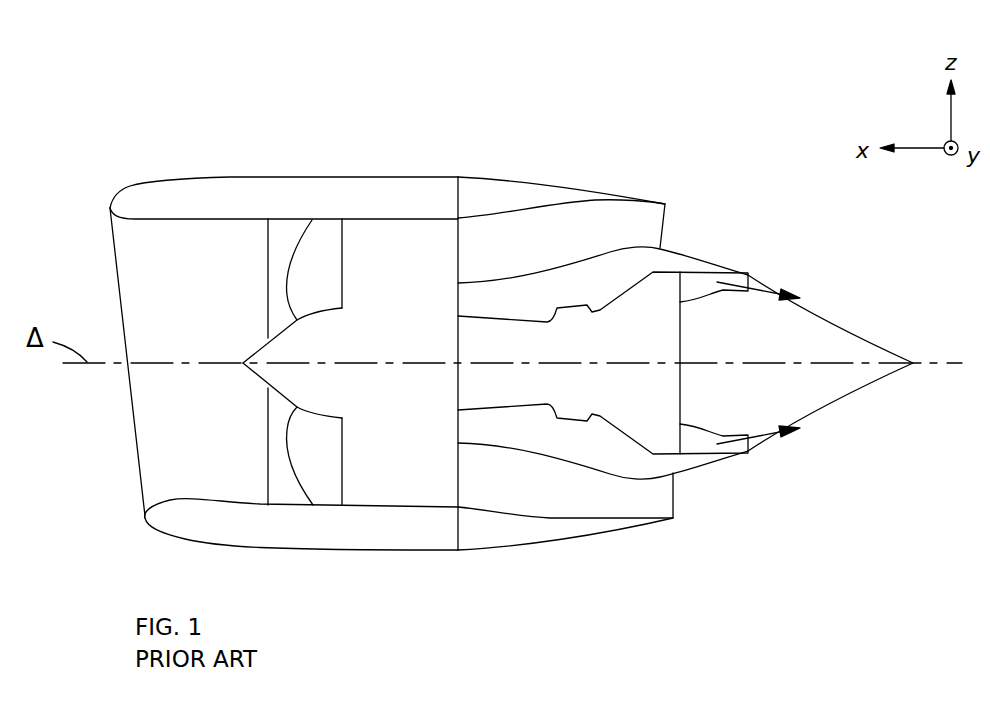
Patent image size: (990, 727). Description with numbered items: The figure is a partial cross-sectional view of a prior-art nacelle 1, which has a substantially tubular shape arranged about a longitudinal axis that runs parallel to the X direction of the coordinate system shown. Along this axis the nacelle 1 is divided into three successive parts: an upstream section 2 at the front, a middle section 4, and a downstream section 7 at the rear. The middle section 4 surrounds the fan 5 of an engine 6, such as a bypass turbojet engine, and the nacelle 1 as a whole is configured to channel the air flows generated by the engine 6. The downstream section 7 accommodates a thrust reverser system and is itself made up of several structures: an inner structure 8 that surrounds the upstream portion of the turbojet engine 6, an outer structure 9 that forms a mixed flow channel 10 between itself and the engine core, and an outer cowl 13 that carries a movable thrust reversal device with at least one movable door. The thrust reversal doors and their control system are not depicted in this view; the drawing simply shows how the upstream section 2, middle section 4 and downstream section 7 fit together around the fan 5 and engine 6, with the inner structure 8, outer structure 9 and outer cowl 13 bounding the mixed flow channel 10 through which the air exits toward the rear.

The nacelle 1 is at (512, 356).
The upstream section 2 is at (185, 210).
The middle section 4 is at (410, 185).
The fan 5 is at (394, 490).
The engine 6 is at (657, 307).
The downstream section 7 is at (574, 170).
The inner structure 8 is at (650, 236).
The outer structure 9 is at (592, 200).
The mixed flow channel 10 is at (473, 246).
The outer cowl 13 is at (552, 520).